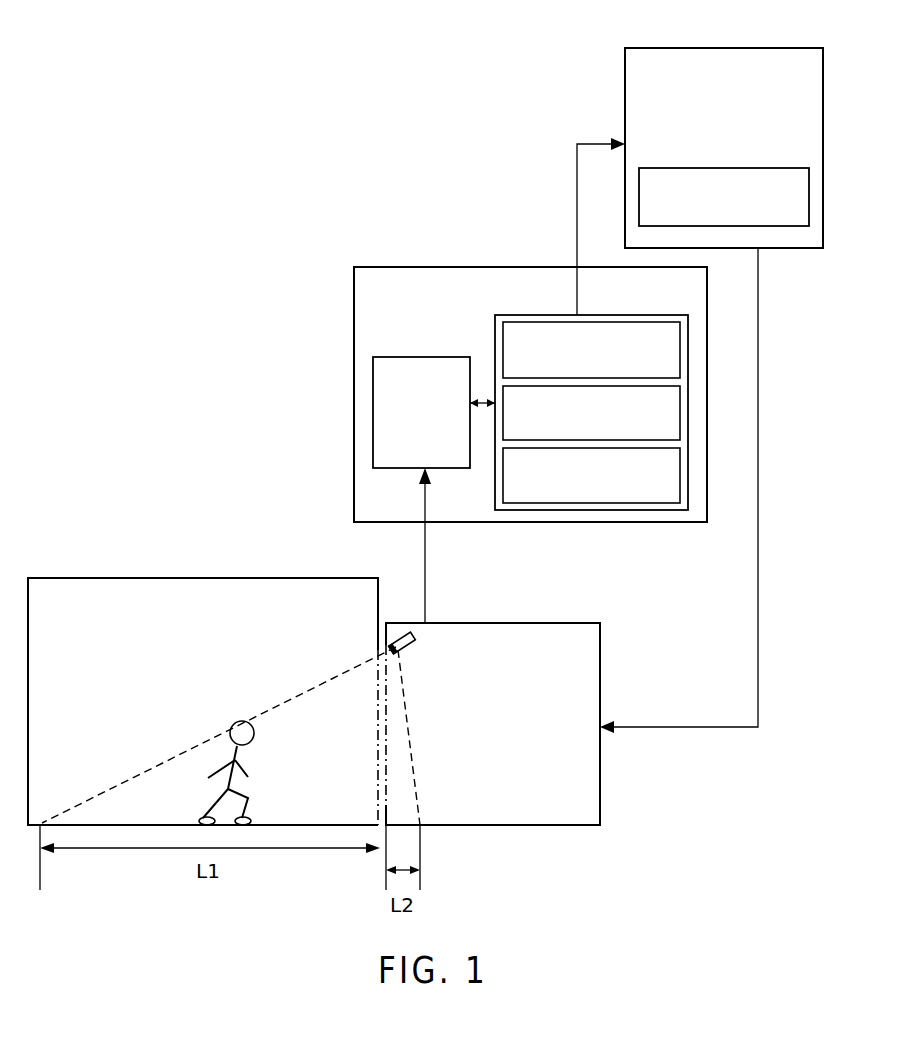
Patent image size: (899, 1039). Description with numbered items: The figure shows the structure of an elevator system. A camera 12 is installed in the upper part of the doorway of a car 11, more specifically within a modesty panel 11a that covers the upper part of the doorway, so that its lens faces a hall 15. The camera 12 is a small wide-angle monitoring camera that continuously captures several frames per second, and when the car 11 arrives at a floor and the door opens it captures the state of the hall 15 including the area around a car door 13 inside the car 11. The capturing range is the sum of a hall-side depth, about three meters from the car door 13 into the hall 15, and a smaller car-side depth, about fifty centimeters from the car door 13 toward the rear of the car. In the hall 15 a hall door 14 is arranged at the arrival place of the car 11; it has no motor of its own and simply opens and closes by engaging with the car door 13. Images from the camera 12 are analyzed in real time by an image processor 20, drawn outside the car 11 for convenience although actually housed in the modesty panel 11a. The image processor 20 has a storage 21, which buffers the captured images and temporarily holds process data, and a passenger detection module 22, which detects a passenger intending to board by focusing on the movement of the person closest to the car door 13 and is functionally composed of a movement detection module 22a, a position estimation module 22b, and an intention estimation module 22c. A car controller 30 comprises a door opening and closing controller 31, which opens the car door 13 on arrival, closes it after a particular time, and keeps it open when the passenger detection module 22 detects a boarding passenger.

The car 11 is at (571, 623).
The modesty panel 11a is at (378, 632).
The camera 12 is at (410, 647).
The car door 13 is at (388, 724).
The hall door 14 is at (378, 731).
The hall 15 is at (318, 823).
The image processor 20 is at (390, 267).
The storage 21 is at (420, 357).
The passenger detection module 22 is at (632, 315).
The movement detection module 22a is at (680, 356).
The position estimation module 22b is at (680, 417).
The intention estimation module 22c is at (680, 479).
The car controller 30 is at (780, 47).
The door opening and closing controller 31 is at (782, 168).